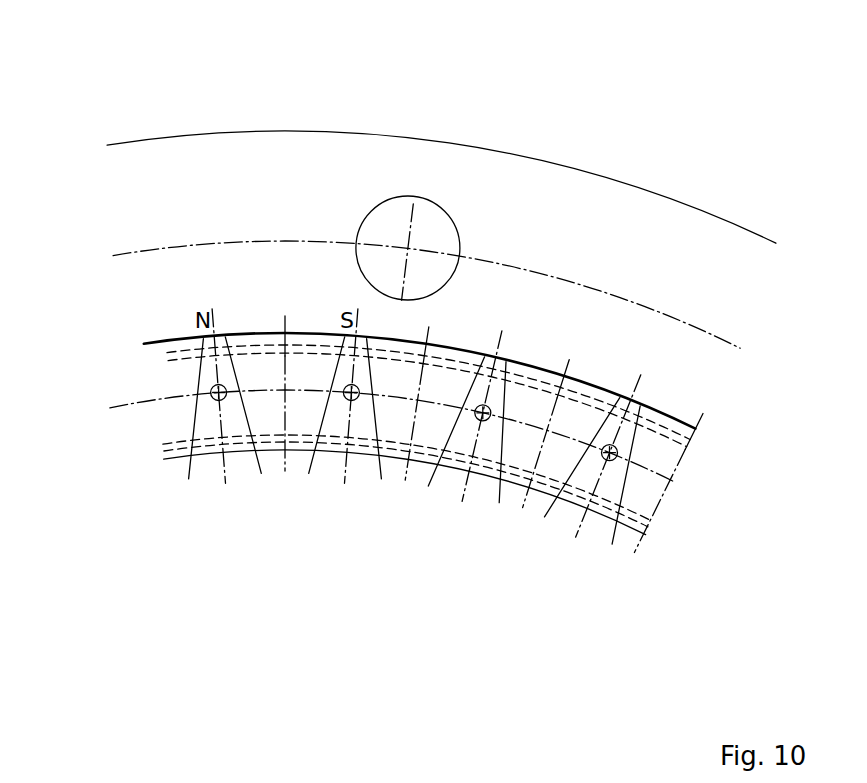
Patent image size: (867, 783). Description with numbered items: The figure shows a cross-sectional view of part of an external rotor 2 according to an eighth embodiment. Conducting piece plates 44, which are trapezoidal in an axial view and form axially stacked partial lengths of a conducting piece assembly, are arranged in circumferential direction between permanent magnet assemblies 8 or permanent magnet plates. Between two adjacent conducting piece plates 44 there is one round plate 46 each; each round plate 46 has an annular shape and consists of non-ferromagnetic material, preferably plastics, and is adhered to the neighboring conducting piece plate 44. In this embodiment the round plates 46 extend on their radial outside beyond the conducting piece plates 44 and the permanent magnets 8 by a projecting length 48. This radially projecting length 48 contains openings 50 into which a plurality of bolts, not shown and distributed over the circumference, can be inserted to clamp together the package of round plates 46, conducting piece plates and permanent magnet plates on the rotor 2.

The rotor 2 is at (133, 130).
The permanent magnet assembly 8 is at (558, 452).
The conducting piece plate 44 is at (465, 428).
The round plate 46 is at (142, 289).
The projecting length 48 is at (247, 198).
The opening 50 is at (399, 222).